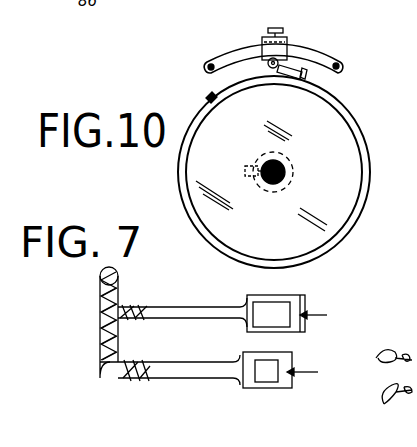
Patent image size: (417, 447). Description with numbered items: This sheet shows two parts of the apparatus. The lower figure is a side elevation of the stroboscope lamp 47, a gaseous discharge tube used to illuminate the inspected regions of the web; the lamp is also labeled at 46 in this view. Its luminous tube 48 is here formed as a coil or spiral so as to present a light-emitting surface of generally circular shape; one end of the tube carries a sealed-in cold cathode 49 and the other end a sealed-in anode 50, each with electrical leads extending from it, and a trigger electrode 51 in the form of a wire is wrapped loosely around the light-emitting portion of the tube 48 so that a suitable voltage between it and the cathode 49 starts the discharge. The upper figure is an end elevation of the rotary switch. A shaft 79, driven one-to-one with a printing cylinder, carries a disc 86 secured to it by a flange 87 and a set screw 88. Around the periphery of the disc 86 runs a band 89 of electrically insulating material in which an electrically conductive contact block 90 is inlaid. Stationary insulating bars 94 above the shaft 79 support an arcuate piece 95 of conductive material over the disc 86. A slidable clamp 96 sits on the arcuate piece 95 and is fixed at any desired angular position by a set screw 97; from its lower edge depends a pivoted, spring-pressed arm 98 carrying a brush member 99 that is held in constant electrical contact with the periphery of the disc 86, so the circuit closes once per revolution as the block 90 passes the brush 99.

In FIG. 7, the tube wall 46 is at (108, 316).
In FIG. 7, the stroboscope lamp 47 is at (98, 303).
In FIG. 7, the luminous tube 48 is at (173, 313).
In FIG. 7, the cold cathode 49 is at (275, 312).
In FIG. 7, the anode 50 is at (265, 378).
In FIG. 7, the trigger electrode 51 is at (147, 305).
In FIG. 10, the shaft 79 is at (288, 167).
In FIG. 10, the disc 86 is at (340, 203).
In FIG. 10, the flange 87 is at (298, 181).
In FIG. 10, the set screw 88 is at (254, 165).
In FIG. 10, the band 89 is at (372, 122).
In FIG. 10, the contact block 90 is at (208, 98).
In FIG. 10, the bar 94 is at (211, 63).
In FIG. 10, the arcuate piece 95 is at (318, 51).
In FIG. 10, the clamp 96 is at (288, 42).
In FIG. 10, the set screw 97 is at (278, 29).
In FIG. 10, the pivoted arm 98 is at (276, 69).
In FIG. 10, the brush member 99 is at (304, 80).